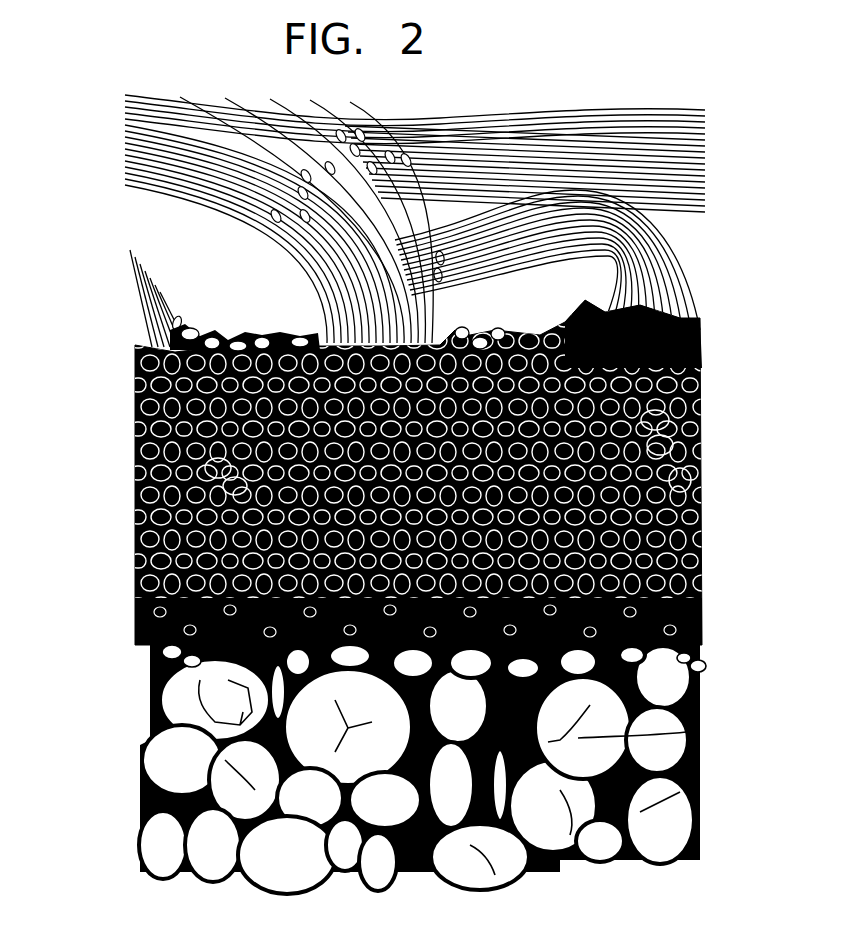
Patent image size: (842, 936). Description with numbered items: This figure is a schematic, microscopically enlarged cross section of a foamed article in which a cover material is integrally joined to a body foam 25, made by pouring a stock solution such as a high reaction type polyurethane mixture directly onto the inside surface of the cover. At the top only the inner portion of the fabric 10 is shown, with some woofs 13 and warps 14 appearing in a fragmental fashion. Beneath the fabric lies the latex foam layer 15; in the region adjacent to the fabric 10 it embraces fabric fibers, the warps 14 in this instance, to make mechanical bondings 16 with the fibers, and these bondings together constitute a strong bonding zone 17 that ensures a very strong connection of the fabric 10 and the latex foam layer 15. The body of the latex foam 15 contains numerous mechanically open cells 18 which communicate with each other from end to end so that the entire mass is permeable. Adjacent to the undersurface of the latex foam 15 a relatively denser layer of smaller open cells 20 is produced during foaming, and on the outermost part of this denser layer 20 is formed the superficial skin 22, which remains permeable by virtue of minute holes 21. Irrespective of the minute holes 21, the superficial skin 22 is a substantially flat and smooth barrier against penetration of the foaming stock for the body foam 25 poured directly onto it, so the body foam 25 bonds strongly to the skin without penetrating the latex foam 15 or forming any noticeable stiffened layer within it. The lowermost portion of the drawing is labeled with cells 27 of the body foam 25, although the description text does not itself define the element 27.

The fabric 10 is at (125, 350).
The woofs 13 is at (638, 130).
The warps 14 is at (687, 245).
The latex foam layer 15 is at (130, 645).
The mechanical bondings 16 is at (318, 340).
The strong bonding zone 17 is at (708, 305).
The mechanically open cells 18 is at (225, 480).
The denser layer of smaller open cells 20 is at (132, 623).
The minute holes 21 is at (168, 648).
The superficial skin 22 is at (178, 660).
The body foam 25 is at (78, 650).
The large parenchyma cells 27 is at (622, 738).